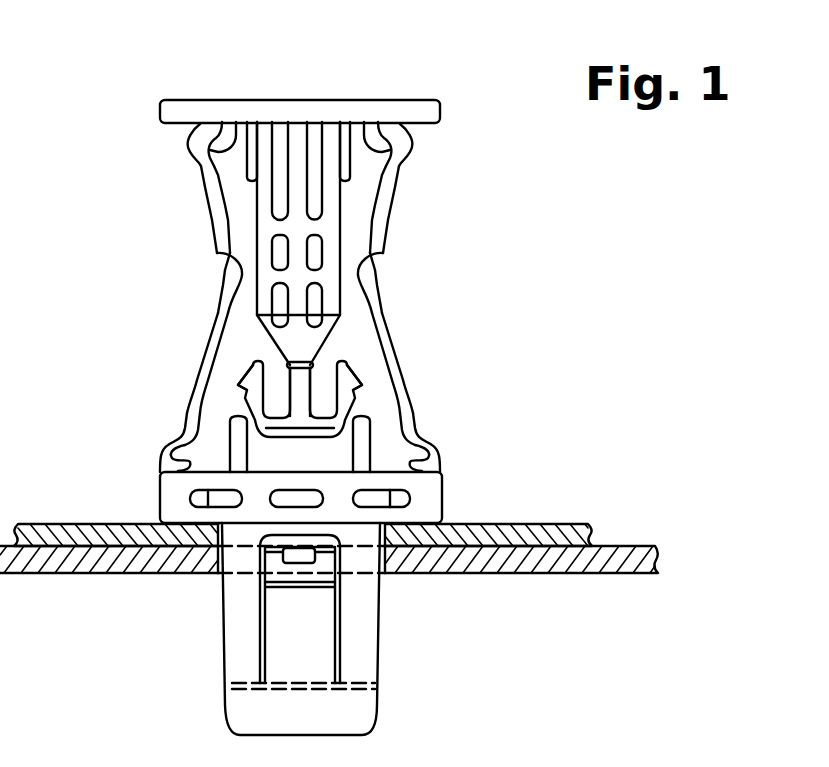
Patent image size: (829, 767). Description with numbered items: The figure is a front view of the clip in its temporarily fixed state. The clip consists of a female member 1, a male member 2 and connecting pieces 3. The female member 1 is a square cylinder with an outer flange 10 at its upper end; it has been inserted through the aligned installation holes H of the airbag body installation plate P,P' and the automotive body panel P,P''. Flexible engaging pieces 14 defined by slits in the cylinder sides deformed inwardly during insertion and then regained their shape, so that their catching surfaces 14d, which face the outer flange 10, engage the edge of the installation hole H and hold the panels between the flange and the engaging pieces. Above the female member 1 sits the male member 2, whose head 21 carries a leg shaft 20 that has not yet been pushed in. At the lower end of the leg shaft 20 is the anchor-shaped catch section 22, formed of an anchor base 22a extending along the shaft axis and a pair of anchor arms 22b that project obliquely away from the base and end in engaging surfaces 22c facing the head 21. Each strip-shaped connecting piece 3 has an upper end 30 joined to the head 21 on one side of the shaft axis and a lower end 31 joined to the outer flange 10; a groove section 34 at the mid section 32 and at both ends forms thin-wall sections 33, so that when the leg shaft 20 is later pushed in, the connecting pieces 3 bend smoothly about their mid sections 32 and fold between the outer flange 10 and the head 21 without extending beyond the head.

The female member 1 is at (380, 650).
The male member 2 is at (330, 228).
The connecting piece 3 is at (207, 208).
The outer flange 10 is at (433, 497).
The flexible engaging piece 14 is at (298, 618).
The catching surface 14d is at (297, 573).
The leg shaft 20 is at (322, 277).
The head 21 is at (423, 100).
The anchor-shaped catch section 22 is at (413, 403).
The anchor base 22a is at (313, 370).
The anchor arm 22b is at (245, 390).
The engaging surface 22c is at (250, 365).
The upper end 30 is at (212, 127).
The lower end 31 is at (158, 462).
The mid section 32 is at (228, 287).
The thin-wall section 33 is at (190, 148).
The groove section 34 is at (236, 133).
The installation hole H is at (392, 540).
The airbag body installation plate P,P' is at (341, 507).
The automotive body panel P,P'' is at (338, 586).